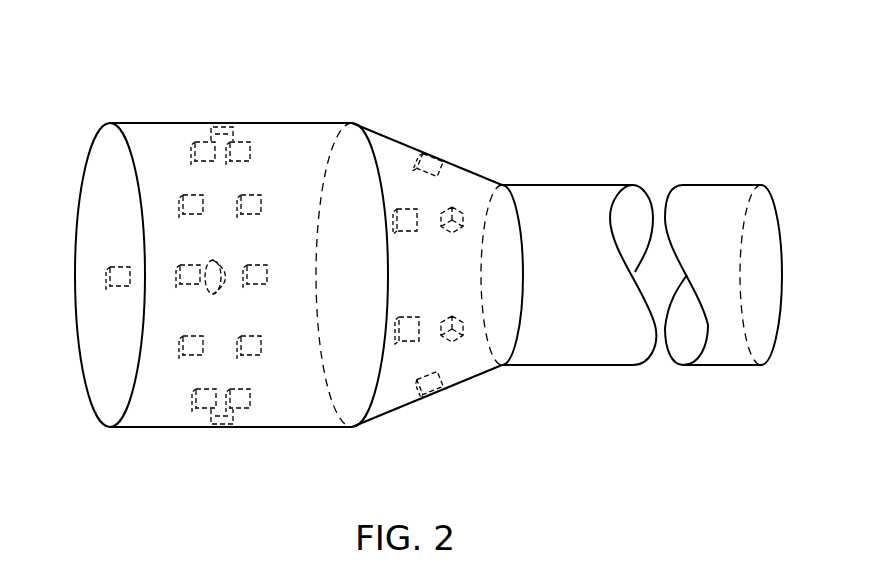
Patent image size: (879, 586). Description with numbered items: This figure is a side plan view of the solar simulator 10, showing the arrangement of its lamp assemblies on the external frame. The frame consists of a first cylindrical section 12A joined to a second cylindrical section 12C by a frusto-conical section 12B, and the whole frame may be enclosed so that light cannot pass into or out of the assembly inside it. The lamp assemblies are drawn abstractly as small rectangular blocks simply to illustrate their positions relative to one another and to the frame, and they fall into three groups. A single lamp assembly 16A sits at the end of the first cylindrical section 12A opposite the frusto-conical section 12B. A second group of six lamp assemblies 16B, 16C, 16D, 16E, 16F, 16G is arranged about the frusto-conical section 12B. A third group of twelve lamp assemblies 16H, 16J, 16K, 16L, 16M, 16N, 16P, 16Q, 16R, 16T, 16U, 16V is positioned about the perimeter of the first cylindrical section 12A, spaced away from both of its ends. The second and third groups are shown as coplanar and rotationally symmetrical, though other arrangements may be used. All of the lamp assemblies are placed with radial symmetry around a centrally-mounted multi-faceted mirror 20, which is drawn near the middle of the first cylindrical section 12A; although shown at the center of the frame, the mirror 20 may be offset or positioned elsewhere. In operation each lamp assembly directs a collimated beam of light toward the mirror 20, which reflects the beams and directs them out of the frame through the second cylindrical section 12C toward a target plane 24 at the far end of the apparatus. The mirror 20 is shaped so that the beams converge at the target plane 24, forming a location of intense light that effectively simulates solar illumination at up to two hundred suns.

The solar simulator 10 is at (123, 90).
The first cylindrical section 12A is at (305, 123).
The frusto-conical section 12B is at (470, 172).
The second cylindrical section 12C is at (713, 185).
The lamp assembly 16A is at (107, 273).
The lamp assembly 16B is at (432, 155).
The lamp assembly 16C is at (466, 220).
The lamp assembly 16D is at (466, 330).
The lamp assembly 16E is at (438, 398).
The lamp assembly 16F is at (410, 315).
The lamp assembly 16G is at (395, 225).
The lamp assembly 16H is at (250, 148).
The lamp assembly 16J is at (262, 200).
The lamp assembly 16K is at (262, 288).
The lamp assembly 16L is at (262, 357).
The lamp assembly 16M is at (252, 400).
The lamp assembly 16N is at (222, 428).
The lamp assembly 16P is at (202, 412).
The lamp assembly 16Q is at (190, 358).
The lamp assembly 16R is at (190, 265).
The lamp assembly 16T is at (180, 203).
The lamp assembly 16U is at (200, 140).
The lamp assembly 16V is at (222, 126).
The centrally-mounted multi-faceted mirror 20 is at (230, 262).
The target plane 24 is at (783, 273).